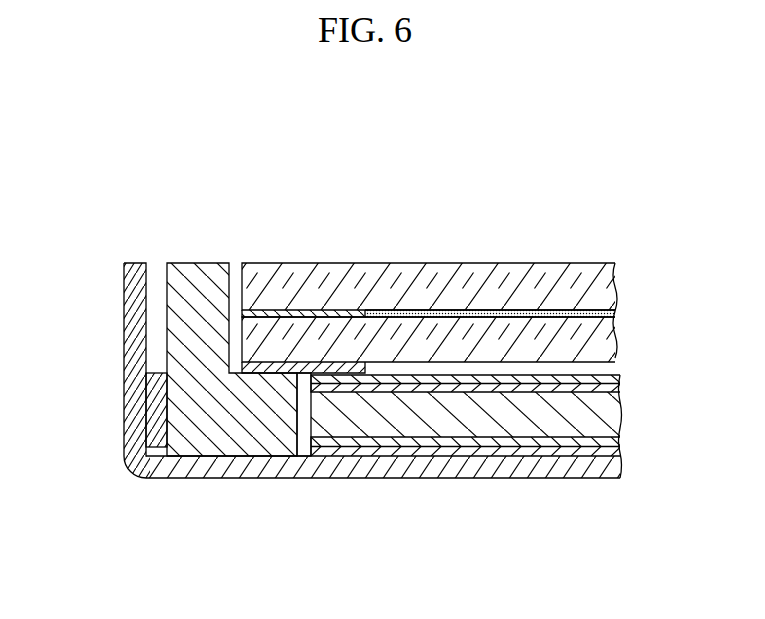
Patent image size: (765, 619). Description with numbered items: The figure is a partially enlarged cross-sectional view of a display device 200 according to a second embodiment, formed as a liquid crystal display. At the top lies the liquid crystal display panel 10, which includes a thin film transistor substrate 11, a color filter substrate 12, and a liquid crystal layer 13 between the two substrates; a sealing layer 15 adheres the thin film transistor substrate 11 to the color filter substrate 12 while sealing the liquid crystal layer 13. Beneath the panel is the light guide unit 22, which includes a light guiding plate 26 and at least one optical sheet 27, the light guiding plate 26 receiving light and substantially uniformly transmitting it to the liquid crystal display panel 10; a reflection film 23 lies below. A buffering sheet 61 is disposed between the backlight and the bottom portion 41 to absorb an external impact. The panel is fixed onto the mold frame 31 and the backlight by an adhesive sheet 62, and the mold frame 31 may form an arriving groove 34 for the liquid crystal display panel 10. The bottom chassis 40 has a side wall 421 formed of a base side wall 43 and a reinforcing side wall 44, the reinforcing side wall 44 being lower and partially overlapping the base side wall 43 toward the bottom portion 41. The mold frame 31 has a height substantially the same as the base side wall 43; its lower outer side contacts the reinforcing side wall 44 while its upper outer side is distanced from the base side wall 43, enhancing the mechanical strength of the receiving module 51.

The display device 200 is at (355, 188).
The liquid crystal display panel 10 is at (545, 258).
The color filter substrate 12 is at (600, 283).
The sealing layer 15 is at (295, 312).
The liquid crystal layer 13 is at (455, 312).
The thin film transistor substrate 11 is at (598, 340).
The arriving groove 34 is at (270, 366).
The receiving module 51 is at (73, 531).
The bottom chassis 40 is at (128, 488).
The mold frame 31 is at (205, 450).
The bottom portion 41 is at (382, 468).
The side wall 421 is at (78, 350).
The base side wall 43 is at (132, 360).
The reinforcing side wall 44 is at (157, 408).
The adhesive sheet 62 is at (329, 366).
The light guide unit 22 is at (666, 372).
The optical sheet 27 is at (612, 380).
The light guiding plate 26 is at (612, 413).
The reflection film 23 is at (619, 440).
The buffering sheet 61 is at (452, 448).